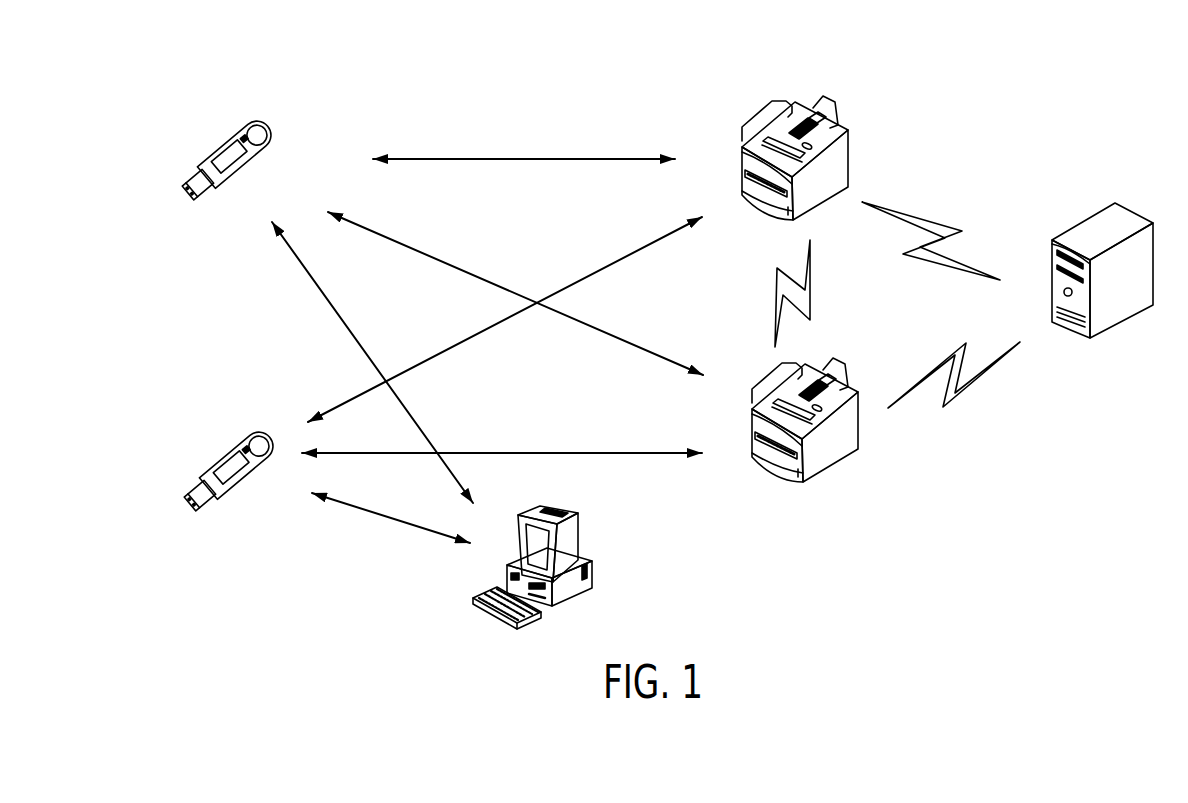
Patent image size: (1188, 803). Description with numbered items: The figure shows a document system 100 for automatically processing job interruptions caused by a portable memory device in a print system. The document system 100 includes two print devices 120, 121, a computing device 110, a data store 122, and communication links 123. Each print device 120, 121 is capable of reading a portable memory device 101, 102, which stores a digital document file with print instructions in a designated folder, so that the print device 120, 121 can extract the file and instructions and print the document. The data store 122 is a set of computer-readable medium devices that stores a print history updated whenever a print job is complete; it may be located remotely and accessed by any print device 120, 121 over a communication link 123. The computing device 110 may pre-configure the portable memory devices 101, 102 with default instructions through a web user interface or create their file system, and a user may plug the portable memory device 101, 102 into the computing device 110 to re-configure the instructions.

The document system 100 is at (556, 89).
The portable memory device 101 is at (249, 432).
The portable memory device 102 is at (255, 121).
The computing device 110 is at (583, 549).
The print device 120 is at (822, 100).
The print device 121 is at (851, 372).
The data store 122 is at (1052, 234).
The communication link 123 is at (936, 222).